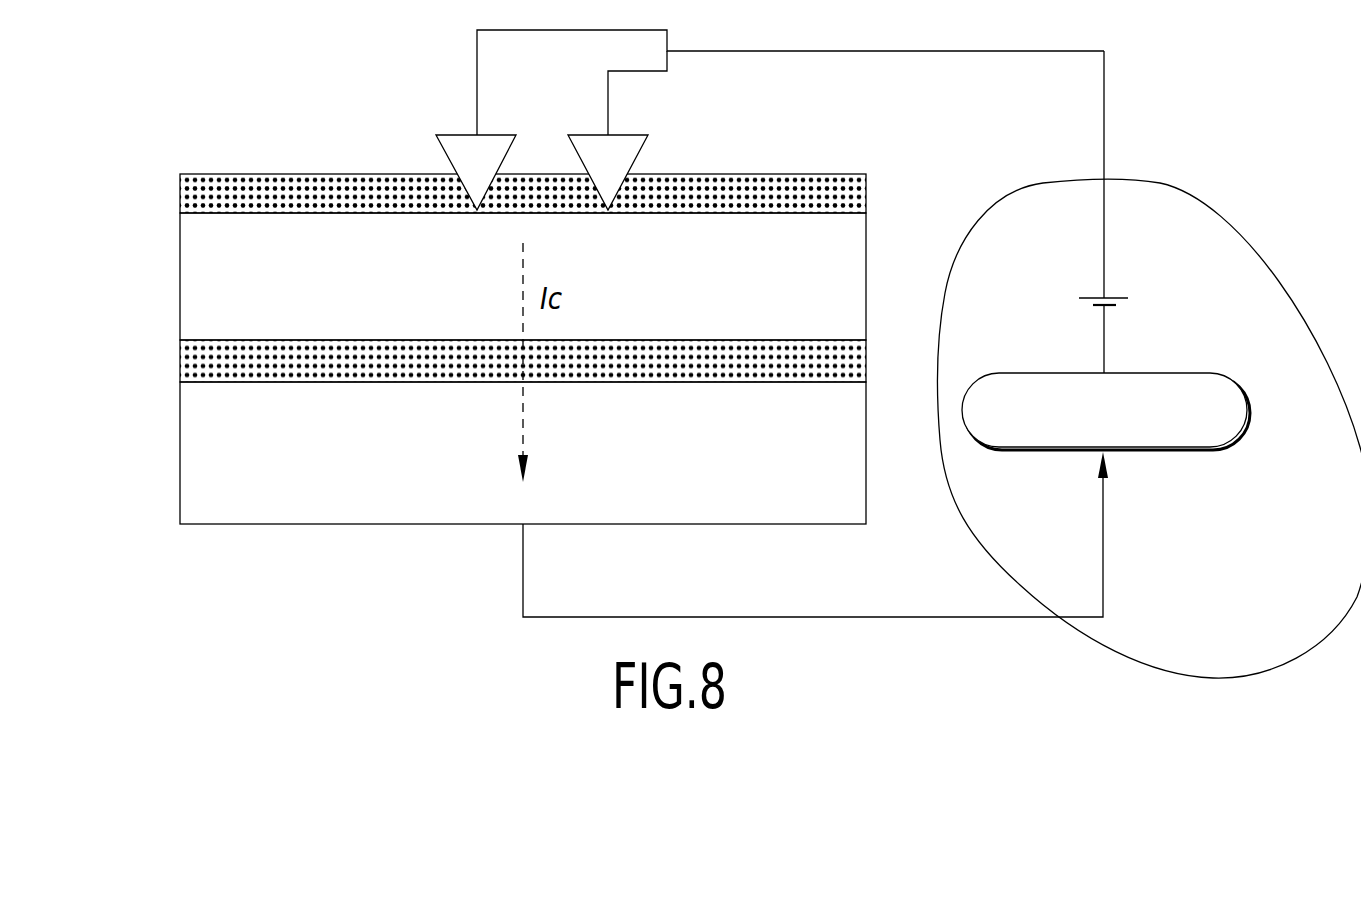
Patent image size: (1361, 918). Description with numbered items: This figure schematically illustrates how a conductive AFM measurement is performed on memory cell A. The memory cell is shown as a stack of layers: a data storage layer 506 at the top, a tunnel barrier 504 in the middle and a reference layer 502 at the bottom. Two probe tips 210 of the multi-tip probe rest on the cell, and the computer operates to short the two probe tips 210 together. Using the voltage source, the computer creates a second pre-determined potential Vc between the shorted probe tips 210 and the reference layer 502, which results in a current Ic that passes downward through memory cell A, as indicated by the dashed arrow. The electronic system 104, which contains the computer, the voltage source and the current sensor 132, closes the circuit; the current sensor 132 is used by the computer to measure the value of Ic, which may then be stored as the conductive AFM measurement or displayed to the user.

The probe tips 210 is at (408, 146).
The data storage layer 506 is at (180, 290).
The tunnel barrier 504 is at (180, 368).
The reference layer 502 is at (180, 462).
The current sensor 132 is at (1232, 444).
The electronic system 104 is at (1149, 364).